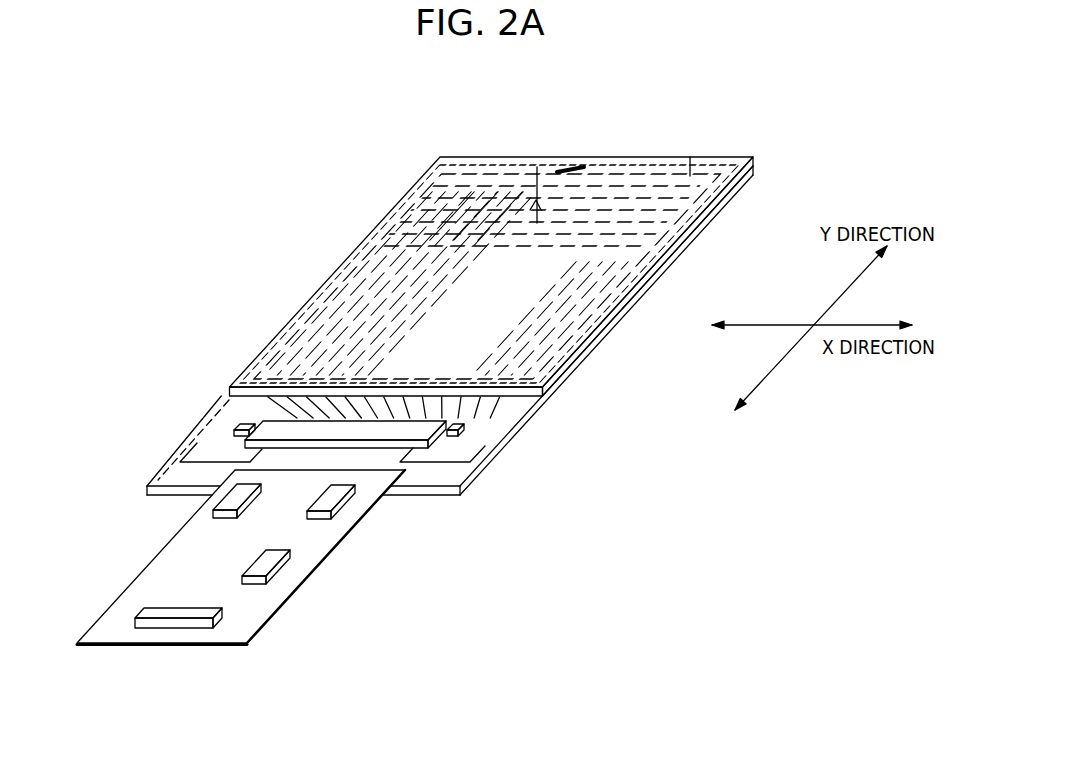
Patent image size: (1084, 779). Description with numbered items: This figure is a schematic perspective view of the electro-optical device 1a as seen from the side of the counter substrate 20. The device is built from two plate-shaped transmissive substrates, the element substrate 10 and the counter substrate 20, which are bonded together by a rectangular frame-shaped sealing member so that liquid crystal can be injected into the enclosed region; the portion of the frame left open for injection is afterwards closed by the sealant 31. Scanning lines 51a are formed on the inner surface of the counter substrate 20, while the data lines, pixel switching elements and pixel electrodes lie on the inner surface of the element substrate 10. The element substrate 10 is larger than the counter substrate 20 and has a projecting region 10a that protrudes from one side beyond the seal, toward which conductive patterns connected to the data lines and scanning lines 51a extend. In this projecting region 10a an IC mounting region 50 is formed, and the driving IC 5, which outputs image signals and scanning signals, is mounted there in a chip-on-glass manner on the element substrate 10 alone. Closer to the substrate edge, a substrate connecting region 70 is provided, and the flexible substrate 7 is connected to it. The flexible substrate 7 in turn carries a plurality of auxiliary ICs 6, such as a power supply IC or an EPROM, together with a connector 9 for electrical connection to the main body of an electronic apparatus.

The electro-optical device 1a is at (843, 137).
The counter substrate 20 is at (737, 188).
The element substrate 10 is at (723, 211).
The projecting region 10a is at (157, 431).
The sealant 31 is at (572, 162).
The scanning lines 51a is at (536, 163).
The driving IC 5 is at (381, 472).
The IC mounting region 50 is at (451, 437).
The substrate connecting region 70 is at (410, 477).
The flexible substrate 7 is at (341, 543).
The auxiliary ICs 6 is at (313, 500).
The connector 9 is at (187, 617).